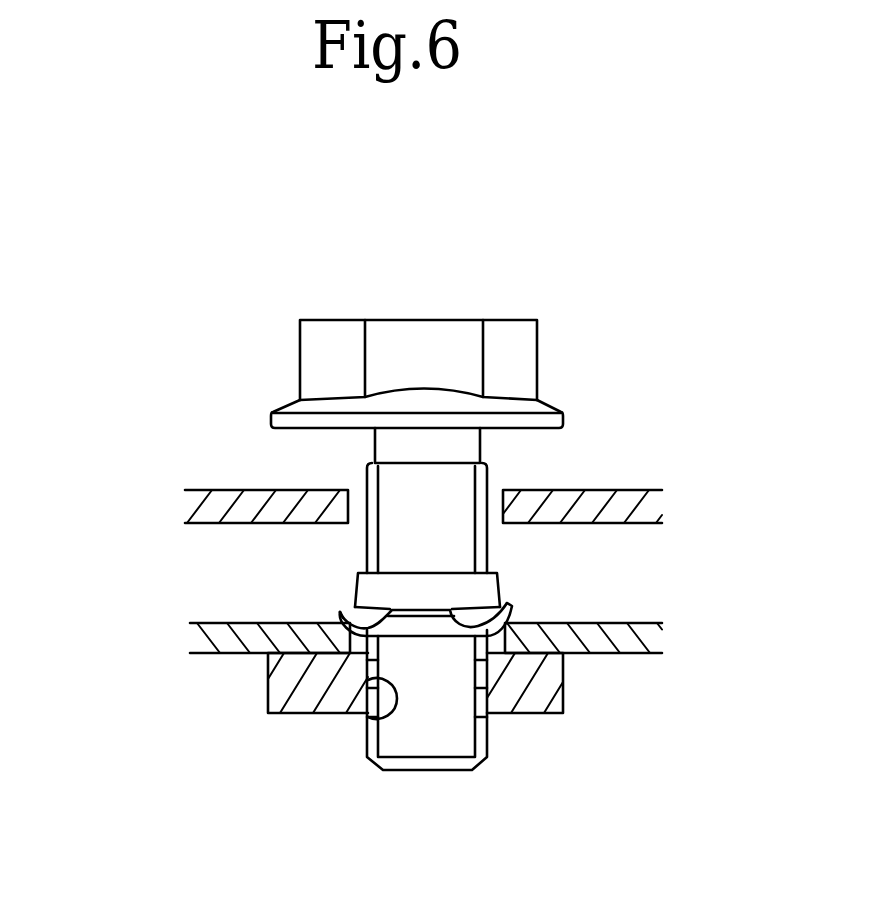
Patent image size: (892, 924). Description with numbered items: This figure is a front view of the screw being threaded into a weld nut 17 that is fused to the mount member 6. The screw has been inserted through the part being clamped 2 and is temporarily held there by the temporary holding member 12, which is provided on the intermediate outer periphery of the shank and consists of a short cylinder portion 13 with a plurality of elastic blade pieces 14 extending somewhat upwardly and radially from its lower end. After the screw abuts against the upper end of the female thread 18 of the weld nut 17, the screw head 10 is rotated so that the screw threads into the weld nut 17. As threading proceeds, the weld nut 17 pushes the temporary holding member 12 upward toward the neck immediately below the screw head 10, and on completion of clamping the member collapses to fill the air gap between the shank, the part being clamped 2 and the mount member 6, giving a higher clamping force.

The screw head 10 is at (428, 340).
The part being clamped 2 is at (618, 502).
The temporary holding member 12 is at (482, 593).
The short cylinder portion 13 is at (370, 608).
The elastic blade pieces 14 is at (338, 614).
The mount member 6 is at (635, 640).
The weld nut 17 is at (547, 700).
The female thread 18 is at (373, 727).